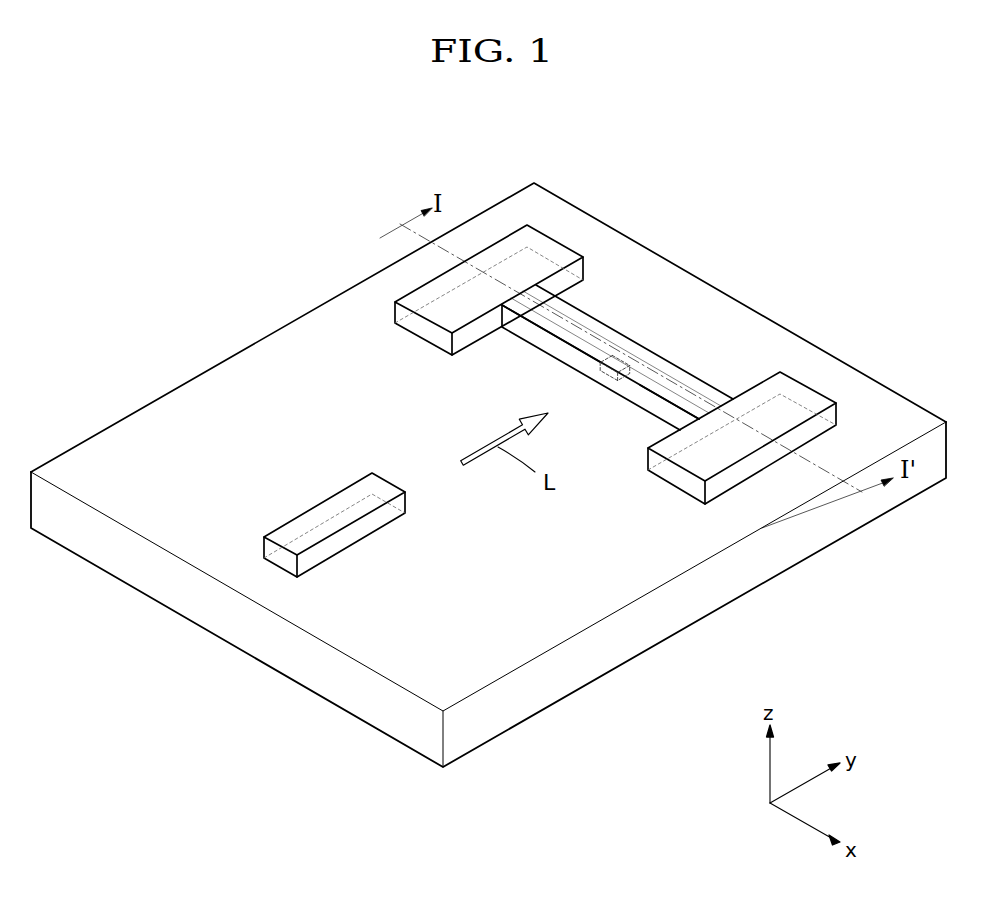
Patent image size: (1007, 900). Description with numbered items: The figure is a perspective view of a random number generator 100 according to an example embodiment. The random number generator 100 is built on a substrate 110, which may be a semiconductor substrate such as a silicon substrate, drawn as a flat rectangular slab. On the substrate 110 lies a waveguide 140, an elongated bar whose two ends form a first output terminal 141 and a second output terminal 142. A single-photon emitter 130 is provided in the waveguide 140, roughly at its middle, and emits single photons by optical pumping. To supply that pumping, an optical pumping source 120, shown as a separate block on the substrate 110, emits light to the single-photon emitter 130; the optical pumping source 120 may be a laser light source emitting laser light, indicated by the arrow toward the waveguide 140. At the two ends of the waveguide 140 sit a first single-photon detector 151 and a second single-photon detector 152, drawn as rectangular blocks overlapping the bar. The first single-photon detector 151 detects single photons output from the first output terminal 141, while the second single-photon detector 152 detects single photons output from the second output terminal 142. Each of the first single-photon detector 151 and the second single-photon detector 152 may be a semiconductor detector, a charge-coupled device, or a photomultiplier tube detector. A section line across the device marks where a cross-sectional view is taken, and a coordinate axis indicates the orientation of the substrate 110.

The random number generator 100 is at (800, 230).
The substrate 110 is at (694, 620).
The optical pumping source 120 is at (322, 508).
The single-photon emitter 130 is at (609, 381).
The waveguide 140 is at (651, 320).
The first output terminal 141 is at (552, 293).
The second output terminal 142 is at (722, 403).
The first single-photon detector 151 is at (552, 248).
The second single-photon detector 152 is at (808, 393).